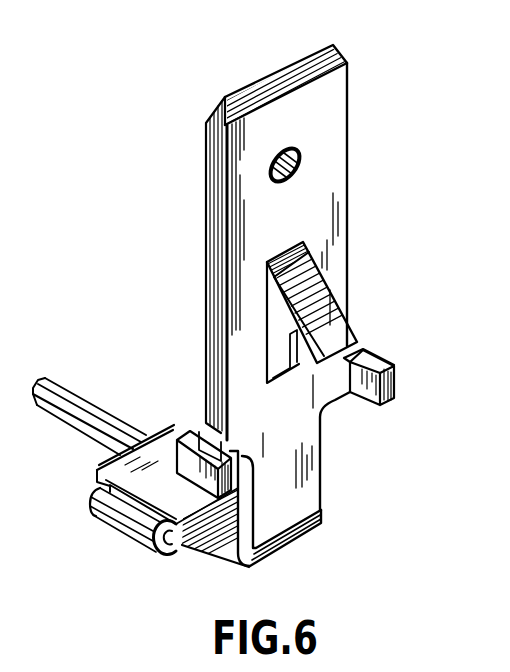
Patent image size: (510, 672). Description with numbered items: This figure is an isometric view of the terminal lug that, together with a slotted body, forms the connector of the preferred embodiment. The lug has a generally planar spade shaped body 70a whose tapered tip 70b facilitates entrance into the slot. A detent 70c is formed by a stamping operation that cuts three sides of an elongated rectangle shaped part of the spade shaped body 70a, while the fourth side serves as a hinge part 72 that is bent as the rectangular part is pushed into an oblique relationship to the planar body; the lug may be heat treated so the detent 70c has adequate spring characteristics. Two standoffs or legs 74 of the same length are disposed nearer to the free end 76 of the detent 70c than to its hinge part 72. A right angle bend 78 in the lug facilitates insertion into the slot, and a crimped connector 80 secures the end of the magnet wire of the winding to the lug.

The plate body 70a is at (347, 137).
The tapered tip 70b is at (330, 43).
The detent 70c is at (330, 287).
The hinge part 72 is at (300, 247).
The standoffs or legs 74 is at (394, 389).
The free end of the detent 76 is at (365, 346).
The right angle bend 78 is at (300, 540).
The crimped connector 80 is at (128, 532).